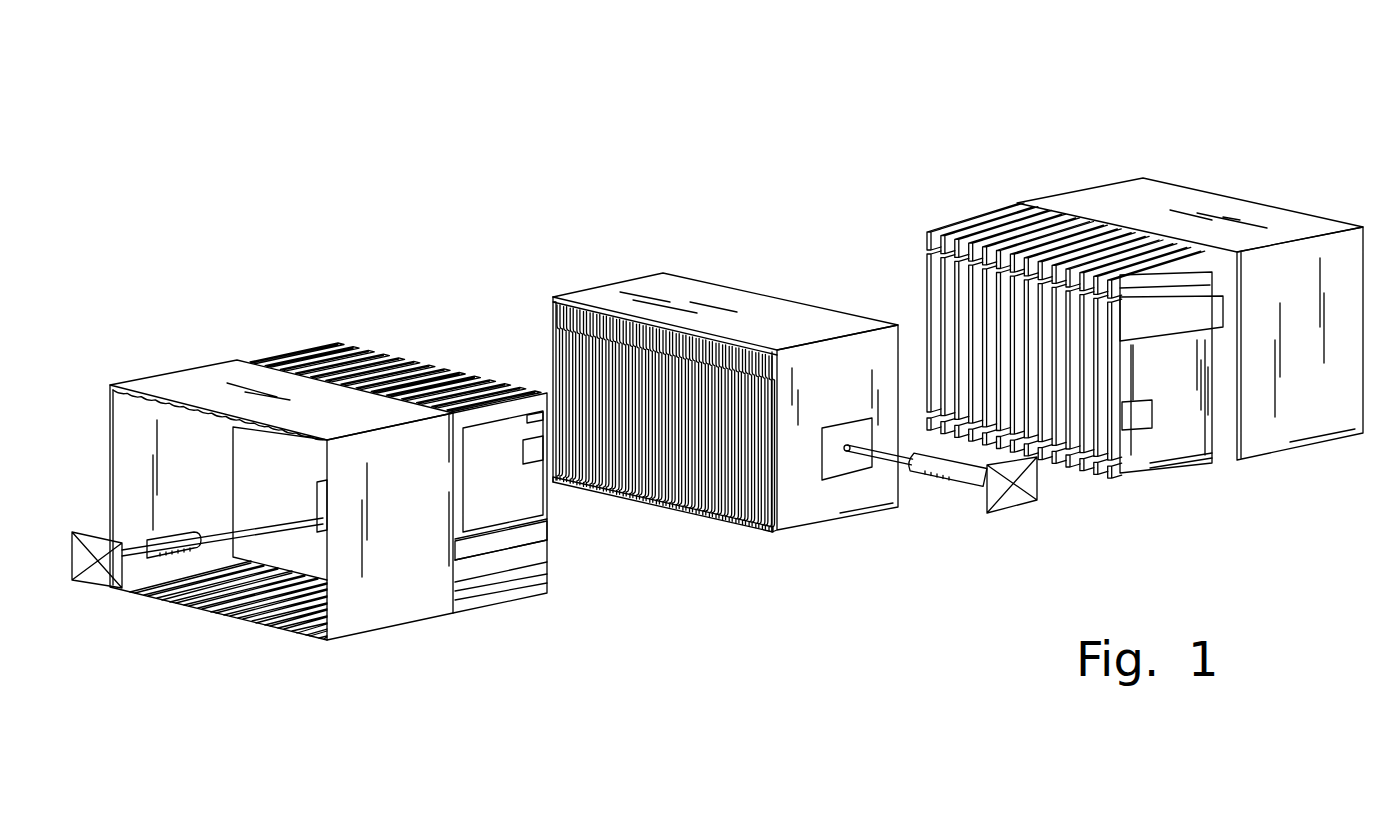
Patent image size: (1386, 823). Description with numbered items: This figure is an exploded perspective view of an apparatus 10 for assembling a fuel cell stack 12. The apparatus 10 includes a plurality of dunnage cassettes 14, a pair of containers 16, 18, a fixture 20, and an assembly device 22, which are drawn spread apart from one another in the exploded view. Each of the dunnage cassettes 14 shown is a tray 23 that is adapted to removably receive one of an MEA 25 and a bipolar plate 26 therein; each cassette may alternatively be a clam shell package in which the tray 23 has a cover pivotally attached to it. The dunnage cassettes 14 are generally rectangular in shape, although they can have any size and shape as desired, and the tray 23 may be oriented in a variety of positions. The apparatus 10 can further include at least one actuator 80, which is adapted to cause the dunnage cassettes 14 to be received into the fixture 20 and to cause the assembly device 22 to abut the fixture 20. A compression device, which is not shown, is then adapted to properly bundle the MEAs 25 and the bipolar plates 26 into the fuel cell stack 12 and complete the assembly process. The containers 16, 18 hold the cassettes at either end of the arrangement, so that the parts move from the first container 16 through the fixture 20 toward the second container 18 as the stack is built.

The apparatus 10 is at (345, 163).
The fuel cell stack 12 is at (533, 368).
The dunnage cassette 14 is at (1170, 404).
The container 16 is at (155, 382).
The container 18 is at (1095, 190).
The fixture 20 is at (758, 300).
The assembly device 22 is at (893, 492).
The tray 23 is at (518, 519).
The MEA 25 is at (553, 330).
The bipolar plate 26 is at (548, 327).
The actuator 80 is at (100, 588).